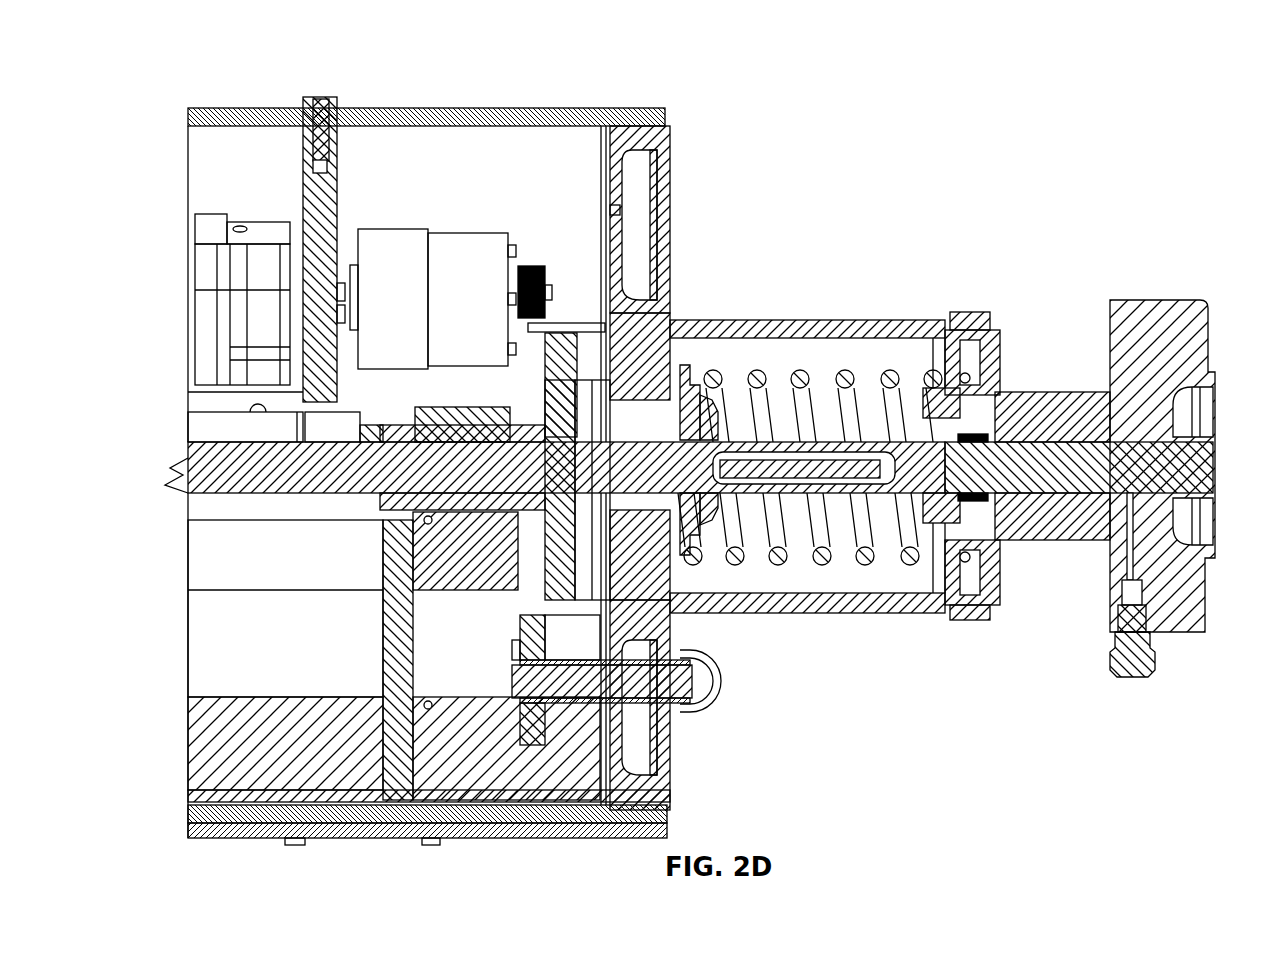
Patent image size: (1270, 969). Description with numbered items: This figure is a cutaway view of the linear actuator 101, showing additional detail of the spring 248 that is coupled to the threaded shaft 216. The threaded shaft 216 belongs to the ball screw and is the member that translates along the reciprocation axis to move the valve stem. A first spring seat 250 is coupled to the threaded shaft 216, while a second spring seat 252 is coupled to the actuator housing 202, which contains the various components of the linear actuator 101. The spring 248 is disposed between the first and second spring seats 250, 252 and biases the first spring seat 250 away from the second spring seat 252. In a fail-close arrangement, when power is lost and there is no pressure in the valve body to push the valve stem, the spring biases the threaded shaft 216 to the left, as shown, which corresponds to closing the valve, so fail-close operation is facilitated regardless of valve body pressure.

The linear actuator 101 is at (198, 74).
The actuator housing 202 is at (855, 326).
The threaded shaft 216 is at (1015, 465).
The spring 248 is at (800, 372).
The first spring seat 250 is at (683, 372).
The second spring seat 252 is at (957, 318).